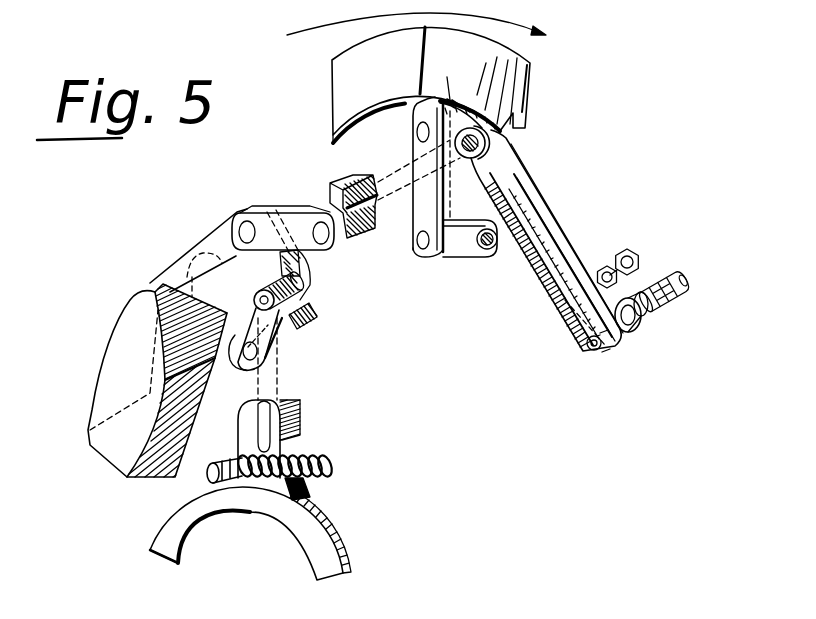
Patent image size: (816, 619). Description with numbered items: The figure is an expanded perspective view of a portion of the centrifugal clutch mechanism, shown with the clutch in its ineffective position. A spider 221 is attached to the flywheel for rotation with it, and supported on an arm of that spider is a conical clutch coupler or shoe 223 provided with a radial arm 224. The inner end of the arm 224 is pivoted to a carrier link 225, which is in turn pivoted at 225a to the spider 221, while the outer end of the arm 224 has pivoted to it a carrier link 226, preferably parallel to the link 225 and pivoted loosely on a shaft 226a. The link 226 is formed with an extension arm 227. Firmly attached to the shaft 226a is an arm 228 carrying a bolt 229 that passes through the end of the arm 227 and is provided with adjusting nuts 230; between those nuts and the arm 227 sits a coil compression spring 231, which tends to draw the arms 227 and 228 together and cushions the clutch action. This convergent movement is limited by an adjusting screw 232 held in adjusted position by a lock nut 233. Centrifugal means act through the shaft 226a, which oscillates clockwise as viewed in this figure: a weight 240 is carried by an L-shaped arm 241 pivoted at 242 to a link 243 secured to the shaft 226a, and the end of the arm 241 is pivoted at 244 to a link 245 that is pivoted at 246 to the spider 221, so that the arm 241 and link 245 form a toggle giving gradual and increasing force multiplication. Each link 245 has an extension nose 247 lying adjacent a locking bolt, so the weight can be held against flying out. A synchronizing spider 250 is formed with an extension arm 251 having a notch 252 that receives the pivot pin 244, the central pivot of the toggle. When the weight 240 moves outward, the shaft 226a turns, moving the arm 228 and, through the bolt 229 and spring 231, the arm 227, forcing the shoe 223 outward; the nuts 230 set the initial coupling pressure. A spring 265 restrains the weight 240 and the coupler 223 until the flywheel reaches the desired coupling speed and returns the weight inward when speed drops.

The spider 221 is at (353, 182).
The conical clutch coupler or shoe 223 is at (431, 85).
The radial arm 224 is at (413, 157).
The carrier link 225 is at (455, 258).
The pivot 225a is at (499, 256).
The carrier link 226 is at (500, 108).
The shaft 226a is at (487, 147).
The extension arm 227 is at (547, 190).
The arm 228 is at (576, 313).
The bolt 229 is at (603, 349).
The adjusting nuts 230 is at (676, 281).
The coil compression spring 231 is at (660, 320).
The adjusting screw 232 is at (612, 262).
The lock nut 233 is at (616, 276).
The weight 240 is at (113, 340).
The L-shaped arm 241 is at (218, 244).
The pivot 242 is at (247, 210).
The link 243 is at (283, 215).
The pivot pin 244 is at (254, 300).
The link 245 is at (275, 341).
The pivot 246 is at (258, 362).
The extension nose 247 is at (228, 362).
The synchronizing spider 250 is at (312, 533).
The extension arm 251 is at (298, 423).
The notch 252 is at (255, 432).
The spring 265 is at (318, 462).